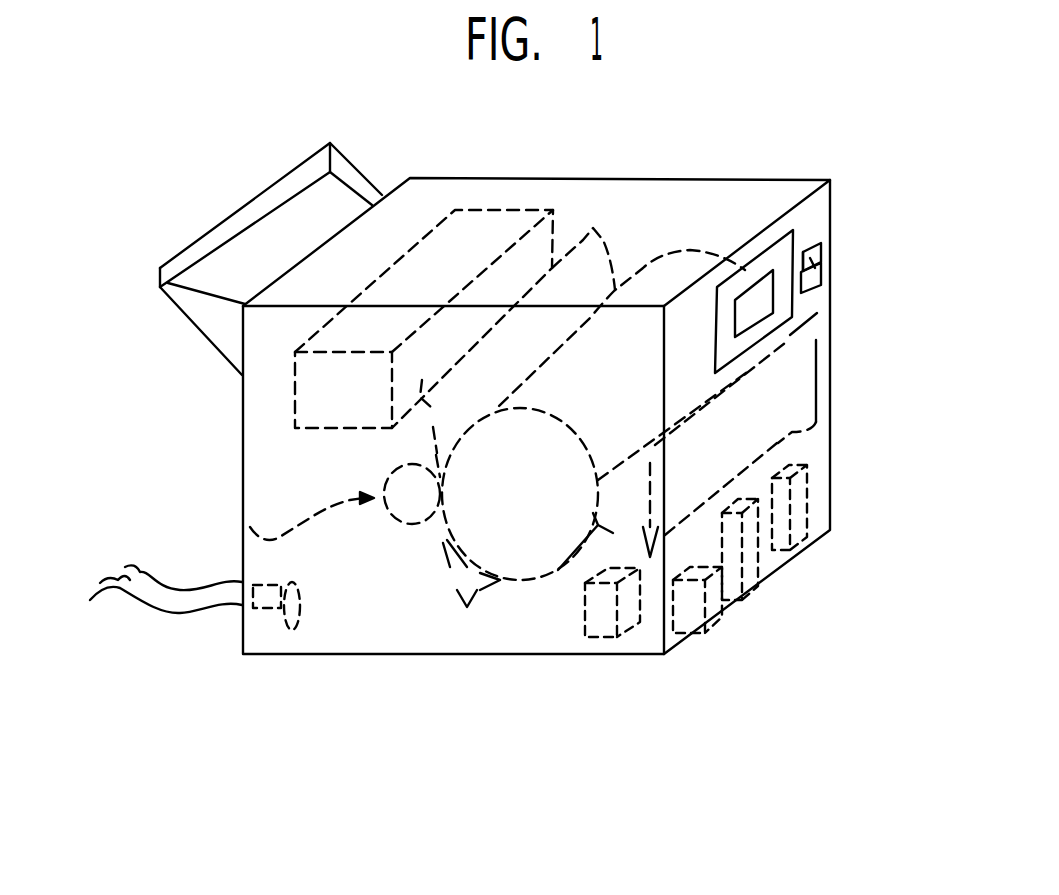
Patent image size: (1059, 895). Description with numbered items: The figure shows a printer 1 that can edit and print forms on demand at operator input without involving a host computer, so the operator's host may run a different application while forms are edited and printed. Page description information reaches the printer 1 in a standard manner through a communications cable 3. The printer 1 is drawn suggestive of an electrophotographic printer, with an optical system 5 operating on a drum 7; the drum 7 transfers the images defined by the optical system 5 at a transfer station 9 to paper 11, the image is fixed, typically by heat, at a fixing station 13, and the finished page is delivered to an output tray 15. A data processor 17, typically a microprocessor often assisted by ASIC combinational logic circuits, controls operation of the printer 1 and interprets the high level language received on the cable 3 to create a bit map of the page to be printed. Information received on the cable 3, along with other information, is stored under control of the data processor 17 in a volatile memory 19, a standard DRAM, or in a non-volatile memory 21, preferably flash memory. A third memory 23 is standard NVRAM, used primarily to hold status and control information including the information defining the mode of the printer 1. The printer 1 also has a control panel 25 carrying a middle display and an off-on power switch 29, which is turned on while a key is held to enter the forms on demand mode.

The printer 1 is at (245, 712).
The communications cable 3 is at (170, 608).
The optical system 5 is at (778, 445).
The drum 7 is at (510, 583).
The transfer station 9 is at (202, 523).
The paper 11 is at (455, 582).
The fixing station 13 is at (294, 400).
The output tray 15 is at (157, 290).
The data processor 17 is at (690, 607).
The volatile memory 19 is at (753, 562).
The non-volatile memory 21 is at (800, 517).
The third memory 23 is at (605, 625).
The control panel 25 is at (774, 314).
The off-on power switch 29 is at (823, 275).